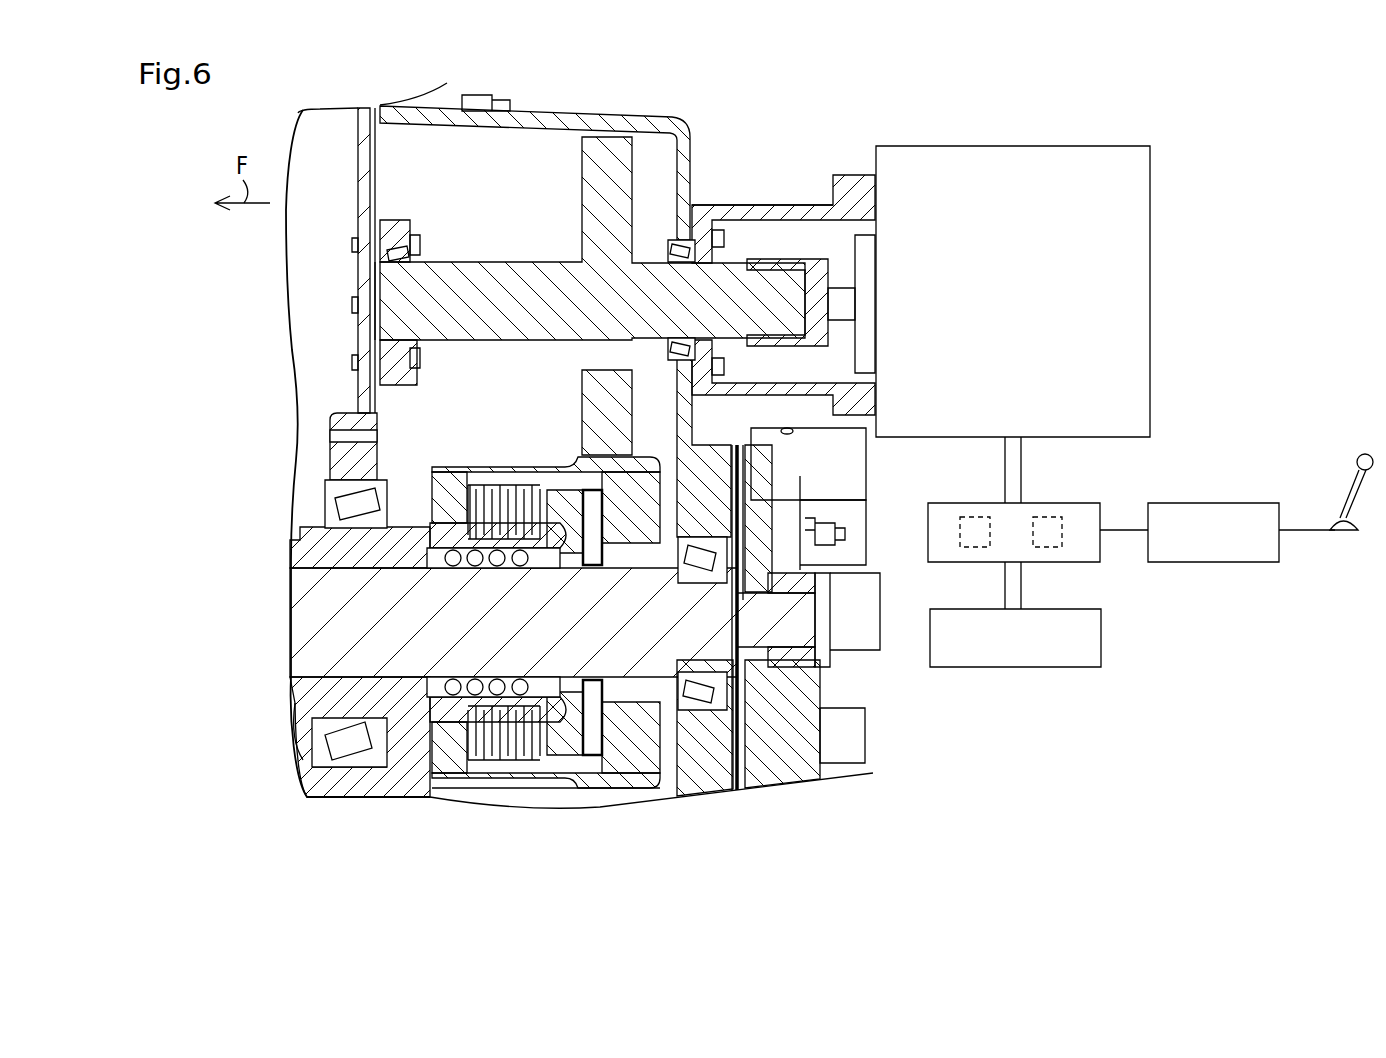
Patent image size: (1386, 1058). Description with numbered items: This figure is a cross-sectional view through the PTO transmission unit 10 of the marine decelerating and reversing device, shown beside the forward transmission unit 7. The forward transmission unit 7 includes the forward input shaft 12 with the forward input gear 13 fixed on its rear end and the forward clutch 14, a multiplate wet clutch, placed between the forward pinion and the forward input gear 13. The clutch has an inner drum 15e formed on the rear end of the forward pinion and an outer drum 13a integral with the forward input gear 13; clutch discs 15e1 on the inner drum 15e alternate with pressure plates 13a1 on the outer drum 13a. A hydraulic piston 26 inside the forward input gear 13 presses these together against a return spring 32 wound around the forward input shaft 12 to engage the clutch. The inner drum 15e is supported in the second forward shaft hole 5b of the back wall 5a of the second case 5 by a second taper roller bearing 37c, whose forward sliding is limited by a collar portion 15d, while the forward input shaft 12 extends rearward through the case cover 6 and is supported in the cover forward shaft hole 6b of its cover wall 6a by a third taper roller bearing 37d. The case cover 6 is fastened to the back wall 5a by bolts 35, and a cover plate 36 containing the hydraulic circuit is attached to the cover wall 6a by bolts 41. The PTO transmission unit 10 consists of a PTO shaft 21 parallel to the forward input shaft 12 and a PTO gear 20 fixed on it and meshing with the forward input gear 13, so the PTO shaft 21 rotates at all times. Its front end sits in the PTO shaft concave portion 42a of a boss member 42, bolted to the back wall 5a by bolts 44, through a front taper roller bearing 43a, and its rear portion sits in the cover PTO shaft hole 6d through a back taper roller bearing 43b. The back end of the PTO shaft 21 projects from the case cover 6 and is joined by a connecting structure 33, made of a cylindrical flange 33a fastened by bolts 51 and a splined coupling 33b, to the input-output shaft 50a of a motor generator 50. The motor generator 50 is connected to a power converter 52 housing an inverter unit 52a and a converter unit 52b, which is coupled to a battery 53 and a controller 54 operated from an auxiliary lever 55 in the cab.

The second case 5 is at (357, 178).
The back wall 5a is at (342, 785).
The second forward shaft hole 5b is at (355, 760).
The case cover 6 is at (693, 147).
The cover wall 6a is at (707, 783).
The cover forward shaft hole 6b is at (712, 706).
The cover PTO shaft hole 6d is at (672, 360).
The forward transmission unit 7 is at (413, 398).
The PTO transmission unit 10 is at (527, 217).
The forward input shaft 12 is at (323, 615).
The forward input gear 13 is at (622, 790).
The outer drum 13a is at (560, 760).
The pressure plates 13a1 is at (590, 760).
The forward clutch 14 is at (407, 745).
The collar portion 15d is at (303, 740).
The inner drum 15e is at (418, 735).
The clutch discs 15e1 is at (452, 730).
The PTO gear 20 is at (607, 140).
The PTO shaft 21 is at (410, 297).
The hydraulic piston 26 is at (590, 770).
The return spring 32 is at (605, 567).
The connecting structure 33 is at (780, 205).
The cylindrical flange 33a is at (745, 205).
The coupling 33b is at (762, 250).
The bolts 35 is at (510, 104).
The cover plate 36 is at (870, 490).
The second taper roller bearing 37c is at (357, 483).
The third taper roller bearing 37d is at (697, 540).
The bolts 41 is at (840, 535).
The boss member 42 is at (405, 218).
The PTO shaft concave portion 42a is at (420, 352).
The front taper roller bearing 43a is at (412, 255).
The back taper roller bearing 43b is at (672, 245).
The bolts 44 is at (443, 440).
The motor generator 50 is at (1017, 313).
The input-output shaft 50a is at (842, 290).
The bolts 51 is at (726, 367).
The power converter 52 is at (1104, 505).
The inverter unit 52a is at (975, 560).
The converter unit 52b is at (1055, 560).
The battery 53 is at (1024, 656).
The controller 54 is at (1220, 546).
The auxiliary lever 55 is at (1346, 494).